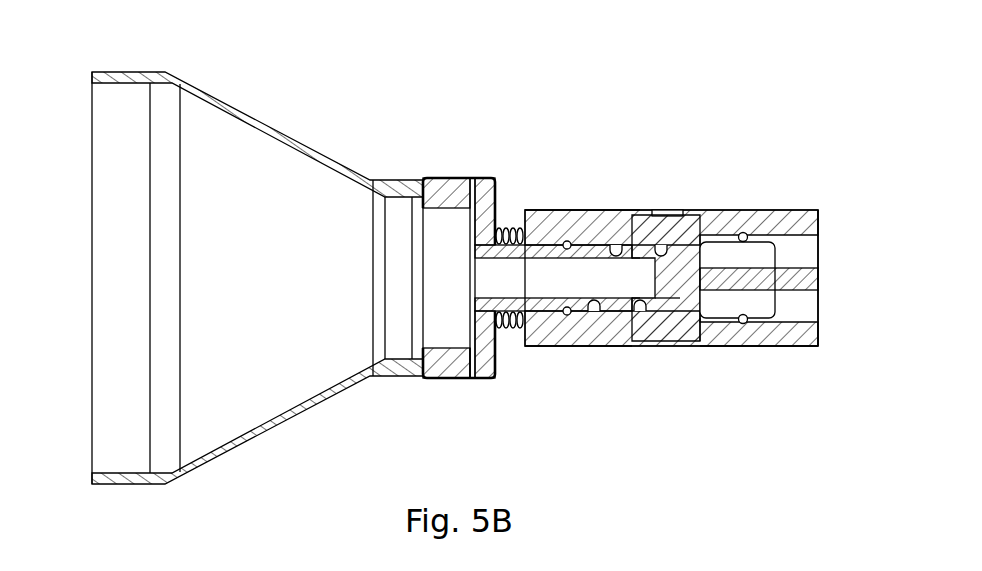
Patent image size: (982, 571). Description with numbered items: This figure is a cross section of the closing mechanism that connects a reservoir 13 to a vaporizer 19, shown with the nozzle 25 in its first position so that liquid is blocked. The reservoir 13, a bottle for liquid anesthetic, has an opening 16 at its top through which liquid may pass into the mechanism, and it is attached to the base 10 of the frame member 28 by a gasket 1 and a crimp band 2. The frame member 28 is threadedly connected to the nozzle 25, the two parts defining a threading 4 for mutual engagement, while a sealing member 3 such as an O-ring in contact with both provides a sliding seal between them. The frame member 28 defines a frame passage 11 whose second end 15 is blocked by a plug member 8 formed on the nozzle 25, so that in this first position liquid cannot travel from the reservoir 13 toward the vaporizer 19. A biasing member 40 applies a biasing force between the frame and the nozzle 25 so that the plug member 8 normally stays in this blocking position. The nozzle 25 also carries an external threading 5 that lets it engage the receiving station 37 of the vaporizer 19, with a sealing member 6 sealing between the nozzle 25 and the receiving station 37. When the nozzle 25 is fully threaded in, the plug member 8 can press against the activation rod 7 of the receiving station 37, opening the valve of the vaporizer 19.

The gasket 1 is at (467, 366).
The crimp band 2 is at (476, 230).
The sealing member 3 is at (582, 105).
The threading 4 is at (616, 202).
The external threading 5 is at (699, 214).
The sealing member 6 is at (768, 246).
The activation rod 7 is at (776, 339).
The plug member 8 is at (746, 389).
The base 10 is at (557, 210).
The frame passage 11 is at (694, 351).
The reservoir 13 is at (257, 247).
The second end 15 is at (693, 359).
The opening 16 is at (445, 299).
The vaporizer 19 is at (760, 393).
The nozzle 25 is at (671, 198).
The frame member 28 is at (578, 385).
The receiving station 37 is at (795, 186).
The biasing member 40 is at (500, 240).